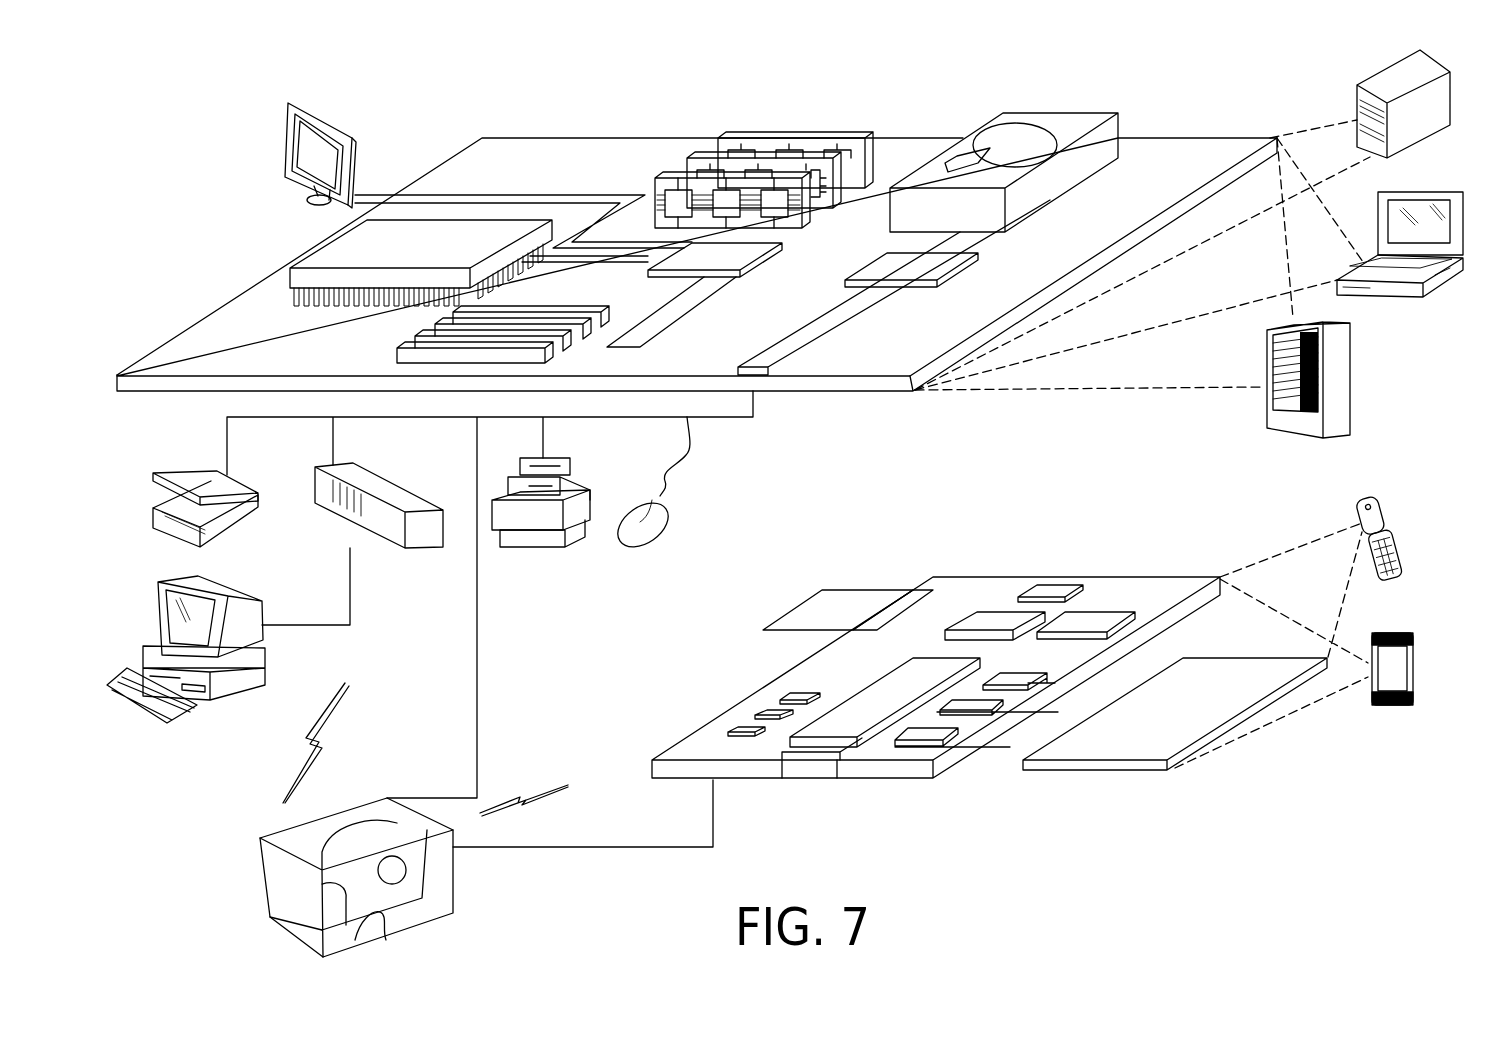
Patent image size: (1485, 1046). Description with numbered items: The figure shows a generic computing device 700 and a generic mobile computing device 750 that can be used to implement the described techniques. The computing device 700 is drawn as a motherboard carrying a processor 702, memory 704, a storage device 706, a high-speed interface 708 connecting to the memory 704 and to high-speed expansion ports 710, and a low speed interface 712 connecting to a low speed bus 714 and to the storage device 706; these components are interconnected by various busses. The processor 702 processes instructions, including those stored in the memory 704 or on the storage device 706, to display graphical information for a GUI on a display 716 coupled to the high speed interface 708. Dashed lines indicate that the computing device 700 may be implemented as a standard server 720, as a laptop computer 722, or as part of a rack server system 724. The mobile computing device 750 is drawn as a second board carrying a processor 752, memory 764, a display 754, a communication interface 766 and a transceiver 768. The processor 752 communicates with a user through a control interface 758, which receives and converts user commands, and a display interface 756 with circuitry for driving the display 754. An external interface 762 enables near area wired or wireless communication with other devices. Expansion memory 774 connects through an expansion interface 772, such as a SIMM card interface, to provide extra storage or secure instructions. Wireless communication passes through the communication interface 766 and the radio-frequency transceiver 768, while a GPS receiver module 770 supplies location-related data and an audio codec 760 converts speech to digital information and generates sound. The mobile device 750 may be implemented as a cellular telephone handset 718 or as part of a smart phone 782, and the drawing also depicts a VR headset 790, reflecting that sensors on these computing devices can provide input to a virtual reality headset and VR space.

The computing device 700 is at (428, 84).
The processor 702 is at (318, 264).
The memory 704 is at (801, 131).
The storage device 706 is at (1054, 117).
The high-speed interface 708 is at (727, 256).
The high-speed expansion ports 710 is at (423, 343).
The low speed interface 712 is at (879, 262).
The low speed bus 714 is at (761, 361).
The display 716 is at (291, 101).
The mobile phone 718 is at (1381, 499).
The standard server 720 is at (1379, 82).
The laptop computer 722 is at (1447, 198).
The rack server system 724 is at (1353, 378).
The mobile computer device 750 is at (1264, 772).
The processor 752 is at (850, 706).
The display 754 is at (1217, 673).
The display interface 756 is at (936, 731).
The control interface 758 is at (978, 705).
The audio codec 760 is at (1020, 676).
The external interface 762 is at (811, 765).
The memory 764 is at (756, 716).
The communication interface 766 is at (996, 612).
The transceiver 768 is at (1095, 612).
The GPS receiver module 770 is at (1050, 590).
The expansion interface 772 is at (914, 590).
The expansion memory 774 is at (824, 590).
The smart phone 782 is at (1386, 634).
The virtual reality headset 790 is at (474, 864).